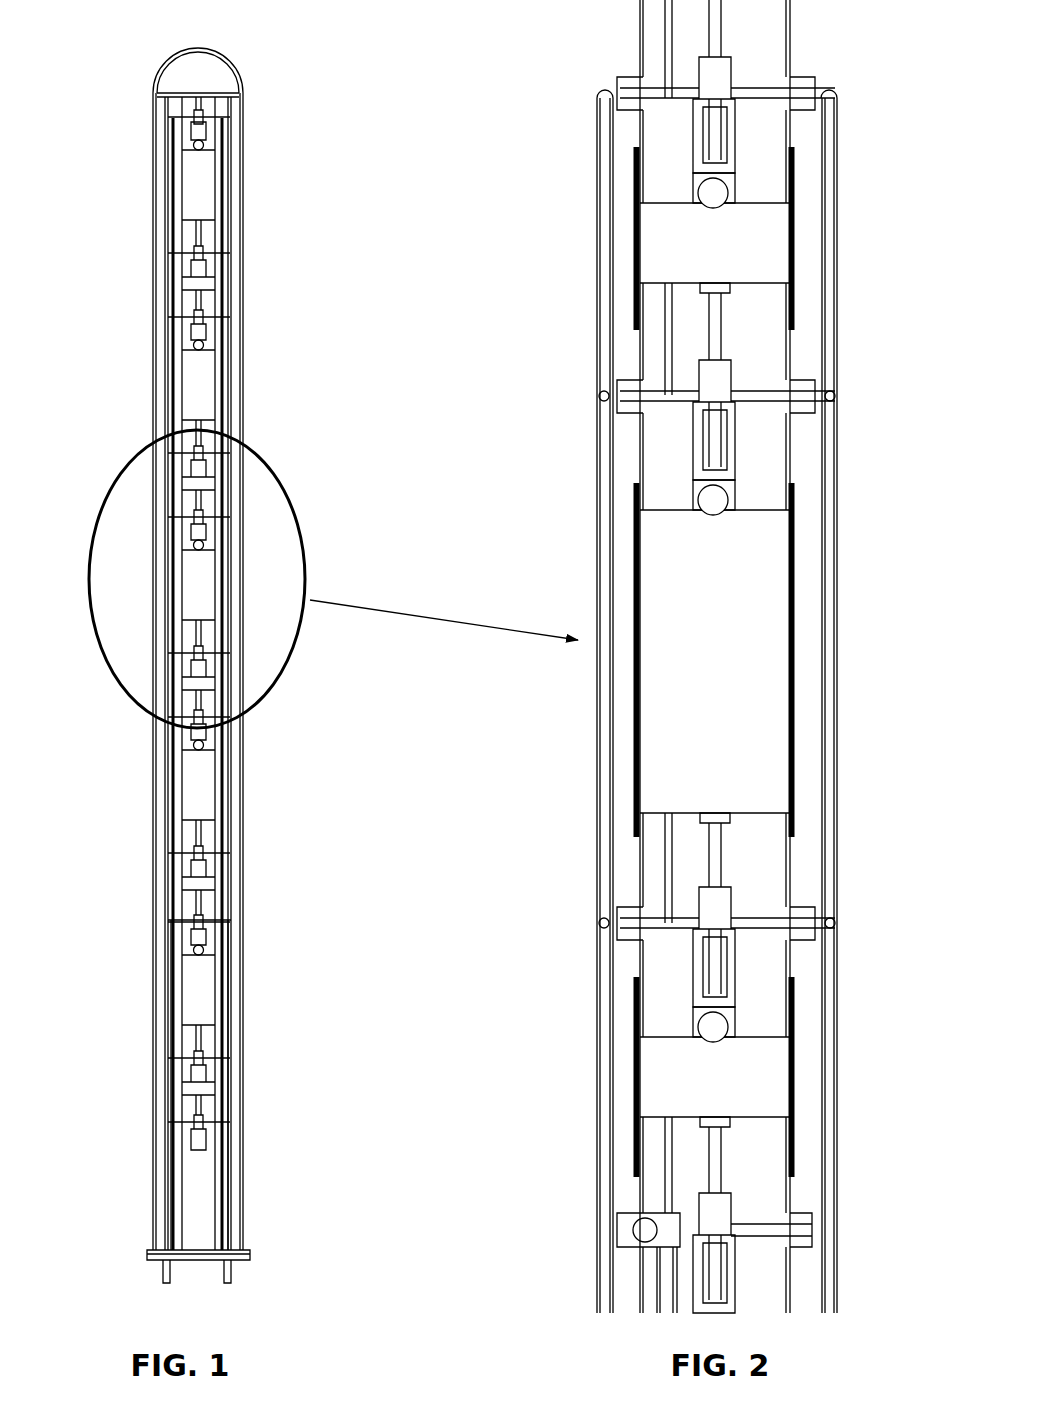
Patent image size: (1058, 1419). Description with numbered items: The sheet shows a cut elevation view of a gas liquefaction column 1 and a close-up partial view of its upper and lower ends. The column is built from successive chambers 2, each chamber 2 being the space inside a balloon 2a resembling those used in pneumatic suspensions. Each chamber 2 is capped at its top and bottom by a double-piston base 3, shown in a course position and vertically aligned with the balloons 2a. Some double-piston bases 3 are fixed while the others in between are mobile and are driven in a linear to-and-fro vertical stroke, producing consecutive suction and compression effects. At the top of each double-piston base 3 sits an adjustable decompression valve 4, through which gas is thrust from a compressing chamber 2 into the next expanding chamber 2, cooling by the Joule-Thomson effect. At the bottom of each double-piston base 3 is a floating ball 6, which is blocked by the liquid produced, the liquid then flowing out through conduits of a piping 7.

In FIG. 1, the gas liquefaction column 1 is at (229, 665).
In FIG. 1, the chamber 2 is at (195, 185).
In FIG. 2, the chamber 2 is at (695, 1075).
In FIG. 2, the balloon 2a is at (797, 243).
In FIG. 2, the double-piston base 3 is at (683, 326).
In FIG. 2, the adjustable decompression valve 4 is at (718, 360).
In FIG. 2, the floating ball 6 is at (722, 190).
In FIG. 2, the piping 7 is at (594, 563).